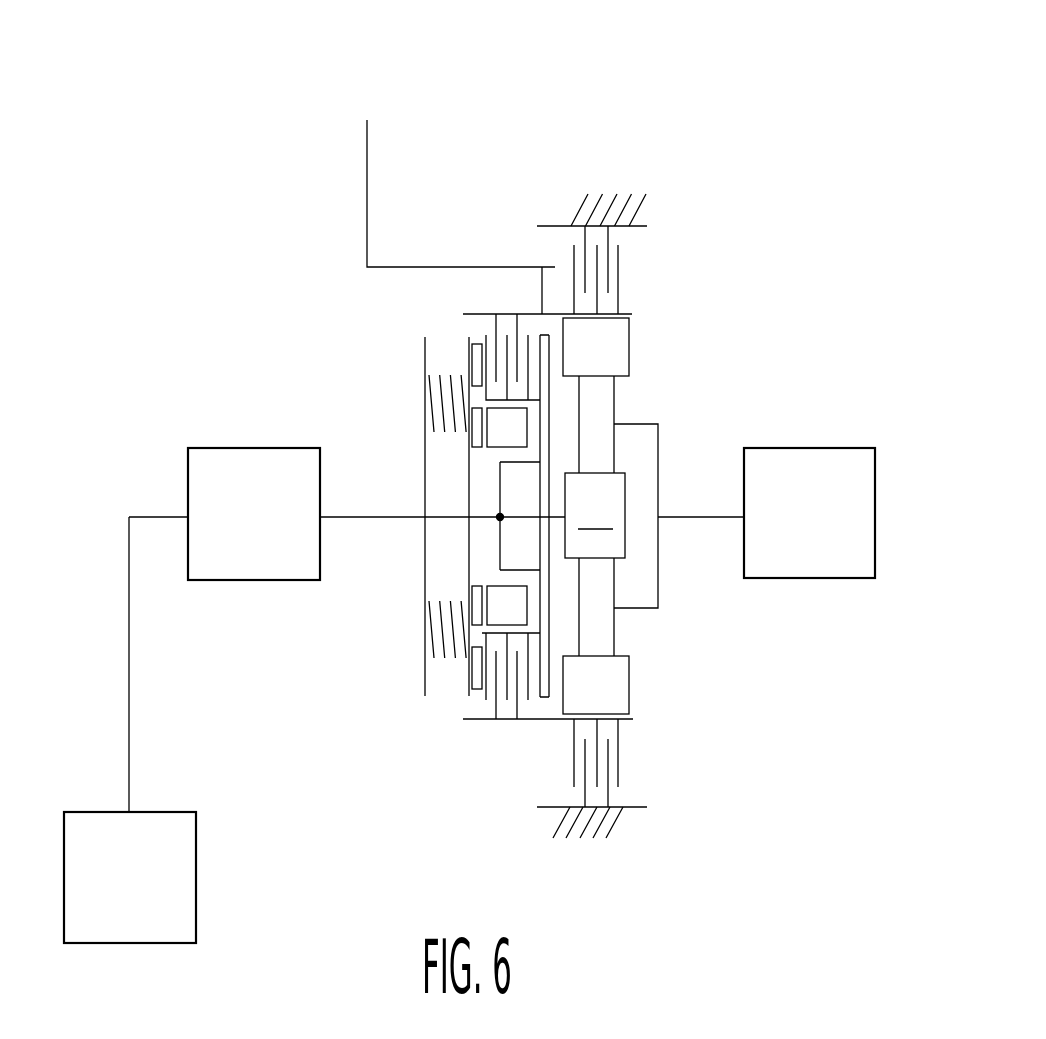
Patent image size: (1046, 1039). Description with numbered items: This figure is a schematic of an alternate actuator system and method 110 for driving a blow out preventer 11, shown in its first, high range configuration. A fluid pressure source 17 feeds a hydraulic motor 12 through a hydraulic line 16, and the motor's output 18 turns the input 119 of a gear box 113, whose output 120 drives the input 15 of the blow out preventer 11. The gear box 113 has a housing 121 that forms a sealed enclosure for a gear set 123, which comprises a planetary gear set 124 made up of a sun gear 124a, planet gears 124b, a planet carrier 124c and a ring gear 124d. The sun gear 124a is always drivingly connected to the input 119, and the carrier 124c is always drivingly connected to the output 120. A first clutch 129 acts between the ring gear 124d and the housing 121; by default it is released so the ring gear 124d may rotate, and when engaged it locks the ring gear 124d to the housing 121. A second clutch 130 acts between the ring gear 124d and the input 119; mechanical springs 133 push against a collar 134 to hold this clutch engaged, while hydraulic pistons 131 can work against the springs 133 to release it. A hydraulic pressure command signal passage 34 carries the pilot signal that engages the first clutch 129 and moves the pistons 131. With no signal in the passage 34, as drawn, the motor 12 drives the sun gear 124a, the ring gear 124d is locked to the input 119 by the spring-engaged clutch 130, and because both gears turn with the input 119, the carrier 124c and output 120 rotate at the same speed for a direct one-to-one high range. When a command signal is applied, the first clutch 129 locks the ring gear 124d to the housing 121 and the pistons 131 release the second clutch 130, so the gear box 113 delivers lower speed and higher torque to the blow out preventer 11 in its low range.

The blow out preventer 11 is at (853, 448).
The hydraulic motor 12 is at (244, 448).
The input 15 is at (730, 517).
The hydraulic line 16 is at (129, 733).
The fluid pressure source 17 is at (196, 890).
The output 18 is at (327, 515).
The hydraulic pressure command signal passage 34 is at (410, 267).
The actuator system and method 110 is at (695, 87).
The gear box 113 is at (552, 118).
The input 119 is at (422, 505).
The output 120 is at (701, 483).
The housing 121 is at (640, 208).
The gear set 123 is at (668, 347).
The planetary gear set 124 is at (640, 690).
The sun gear 124a is at (595, 515).
The planet gears 124b is at (614, 403).
The planet carrier 124c is at (658, 435).
The ring gear 124d is at (629, 345).
The first clutch 129 is at (620, 272).
The second clutch 130 is at (505, 355).
The hydraulic pistons 131 is at (492, 450).
The mechanical springs 133 is at (443, 394).
The collar 134 is at (469, 440).